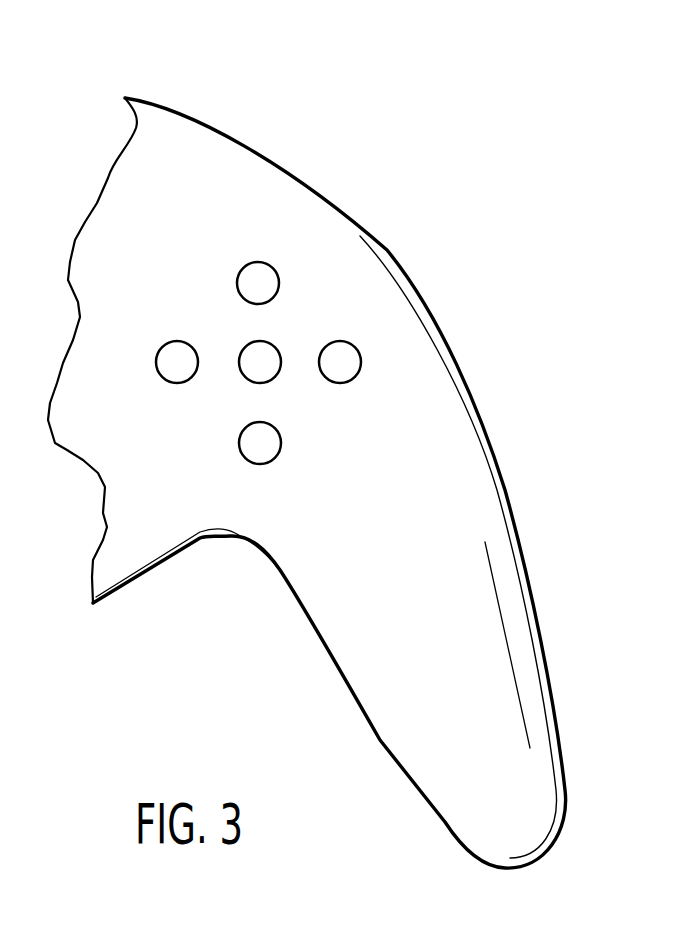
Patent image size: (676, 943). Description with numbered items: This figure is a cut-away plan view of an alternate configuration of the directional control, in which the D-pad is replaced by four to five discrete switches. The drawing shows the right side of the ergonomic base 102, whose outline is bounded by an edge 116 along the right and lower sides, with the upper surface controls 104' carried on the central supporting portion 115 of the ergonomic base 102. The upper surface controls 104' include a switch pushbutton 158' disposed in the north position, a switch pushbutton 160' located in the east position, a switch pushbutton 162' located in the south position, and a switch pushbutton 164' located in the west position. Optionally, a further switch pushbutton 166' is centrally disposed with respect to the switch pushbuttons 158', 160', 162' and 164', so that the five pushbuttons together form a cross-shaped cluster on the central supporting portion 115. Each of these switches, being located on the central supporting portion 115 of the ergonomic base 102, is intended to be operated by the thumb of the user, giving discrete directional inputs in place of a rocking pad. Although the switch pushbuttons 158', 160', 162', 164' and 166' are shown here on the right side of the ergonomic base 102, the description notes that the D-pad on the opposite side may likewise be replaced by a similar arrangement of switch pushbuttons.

The upper surface controls 104' is at (329, 483).
The central supporting portion 115 is at (184, 148).
The ergonomic base 102 is at (175, 565).
The peripheral edge strip 116 is at (496, 622).
The switch pushbutton 158' is at (353, 277).
The switch pushbutton 160' is at (416, 348).
The switch pushbutton 162' is at (306, 451).
The switch pushbutton 164' is at (185, 306).
The switch pushbutton 166' is at (332, 388).